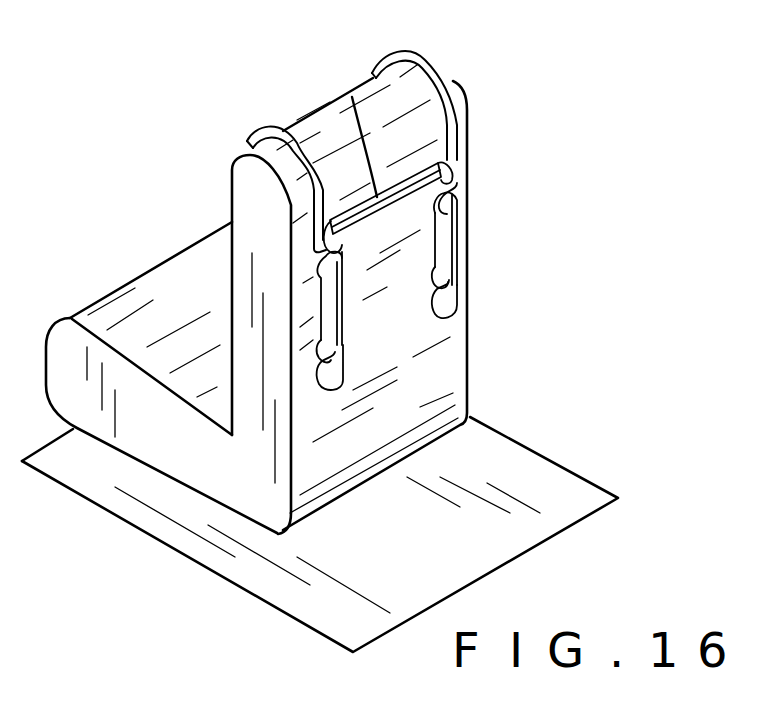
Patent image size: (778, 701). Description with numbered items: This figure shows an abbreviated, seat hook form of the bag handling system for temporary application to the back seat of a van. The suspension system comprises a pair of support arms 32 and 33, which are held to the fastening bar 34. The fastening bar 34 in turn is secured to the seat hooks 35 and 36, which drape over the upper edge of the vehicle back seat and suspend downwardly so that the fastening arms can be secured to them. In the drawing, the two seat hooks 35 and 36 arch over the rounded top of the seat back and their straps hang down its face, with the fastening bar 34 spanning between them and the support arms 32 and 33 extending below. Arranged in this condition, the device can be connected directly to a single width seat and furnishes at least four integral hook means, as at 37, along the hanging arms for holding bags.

The support arm 32 is at (343, 368).
The support arm 33 is at (460, 299).
The fastening bar 34 is at (350, 95).
The seat hook 35 is at (248, 138).
The seat hook 36 is at (382, 53).
The integral hook means 37 is at (458, 225).